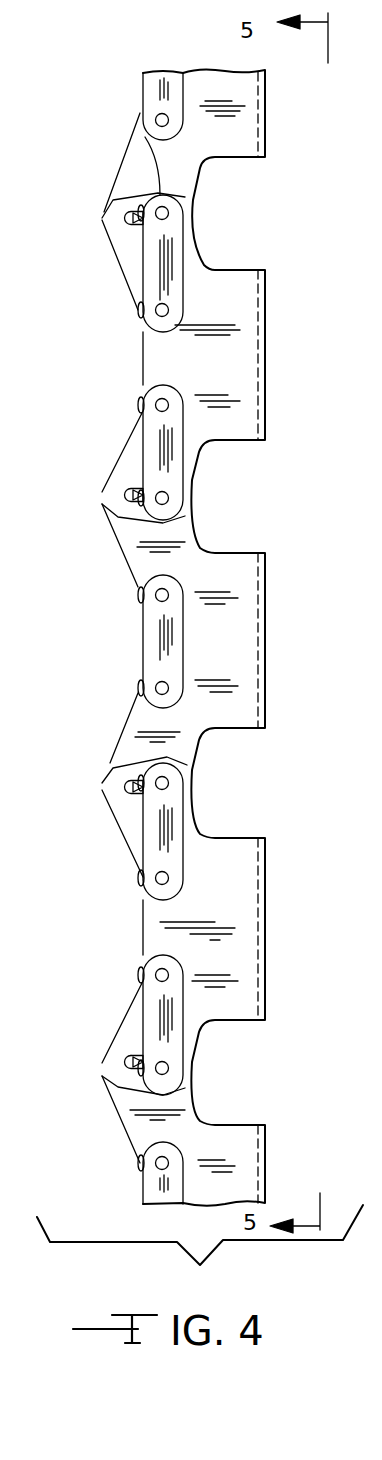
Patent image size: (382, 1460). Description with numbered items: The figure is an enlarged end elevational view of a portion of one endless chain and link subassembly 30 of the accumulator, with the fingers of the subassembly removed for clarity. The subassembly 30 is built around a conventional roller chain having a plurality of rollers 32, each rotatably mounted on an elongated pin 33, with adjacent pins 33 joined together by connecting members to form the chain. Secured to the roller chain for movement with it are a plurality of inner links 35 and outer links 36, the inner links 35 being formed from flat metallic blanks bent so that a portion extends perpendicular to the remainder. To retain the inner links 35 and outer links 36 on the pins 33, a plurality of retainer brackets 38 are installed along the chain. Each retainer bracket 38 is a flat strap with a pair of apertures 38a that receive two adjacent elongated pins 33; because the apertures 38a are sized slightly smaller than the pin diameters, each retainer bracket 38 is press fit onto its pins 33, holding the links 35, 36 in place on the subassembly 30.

The endless chain and link subassembly 30 is at (137, 66).
The roller 32 is at (140, 113).
The elongated pin 33 is at (145, 150).
The inner link 35 is at (248, 125).
The outer link 36 is at (233, 422).
The retainer bracket 38 is at (167, 243).
The retainer bracket aperture 38a is at (158, 220).